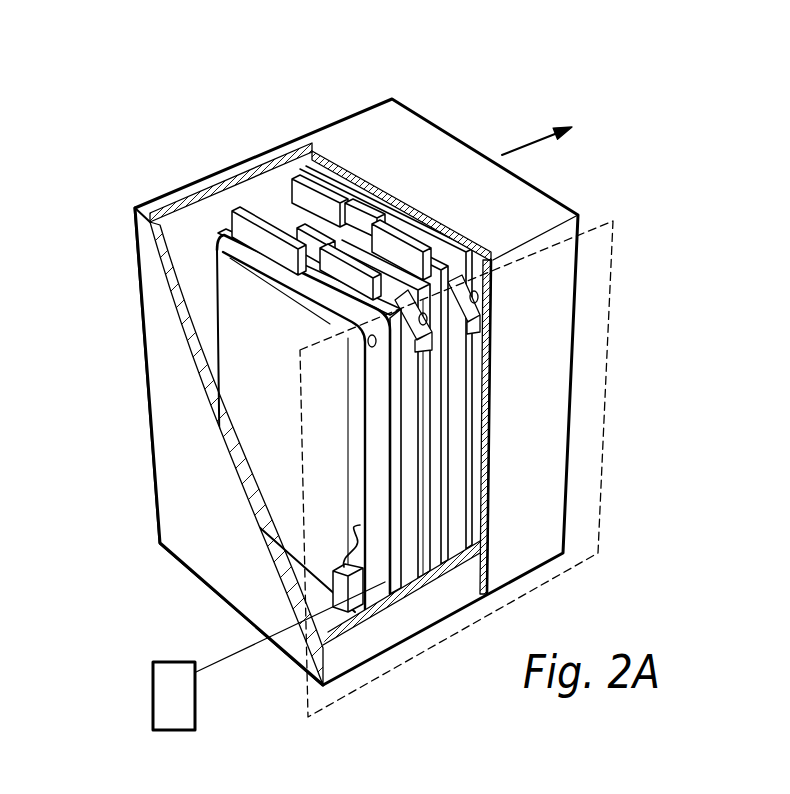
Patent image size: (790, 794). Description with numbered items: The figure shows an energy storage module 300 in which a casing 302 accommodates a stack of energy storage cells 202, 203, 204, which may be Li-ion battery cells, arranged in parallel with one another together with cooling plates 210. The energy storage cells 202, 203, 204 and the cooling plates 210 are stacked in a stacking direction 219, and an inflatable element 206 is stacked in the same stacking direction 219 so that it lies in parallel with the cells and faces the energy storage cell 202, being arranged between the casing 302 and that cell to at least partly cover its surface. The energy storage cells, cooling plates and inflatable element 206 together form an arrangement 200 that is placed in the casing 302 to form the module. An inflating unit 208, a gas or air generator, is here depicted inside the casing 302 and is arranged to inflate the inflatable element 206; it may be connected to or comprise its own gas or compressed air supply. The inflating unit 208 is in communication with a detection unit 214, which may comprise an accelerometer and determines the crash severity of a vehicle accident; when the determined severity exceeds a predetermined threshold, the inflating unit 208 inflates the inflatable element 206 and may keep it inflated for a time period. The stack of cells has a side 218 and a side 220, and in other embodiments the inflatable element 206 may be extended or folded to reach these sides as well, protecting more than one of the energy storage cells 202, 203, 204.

The arrangement 200 is at (550, 793).
The energy storage cell 202 is at (243, 210).
The energy storage cell 203 is at (291, 180).
The energy storage cell 204 is at (347, 183).
The inflatable element 206 is at (250, 405).
The inflating unit 208 is at (357, 593).
The cooling plates 210 is at (475, 353).
The detection unit 214 is at (163, 713).
The side 218 is at (226, 366).
The stacking direction 219 is at (560, 129).
The side 220 is at (593, 525).
The energy storage module 300 is at (500, 96).
The casing 302 is at (338, 668).